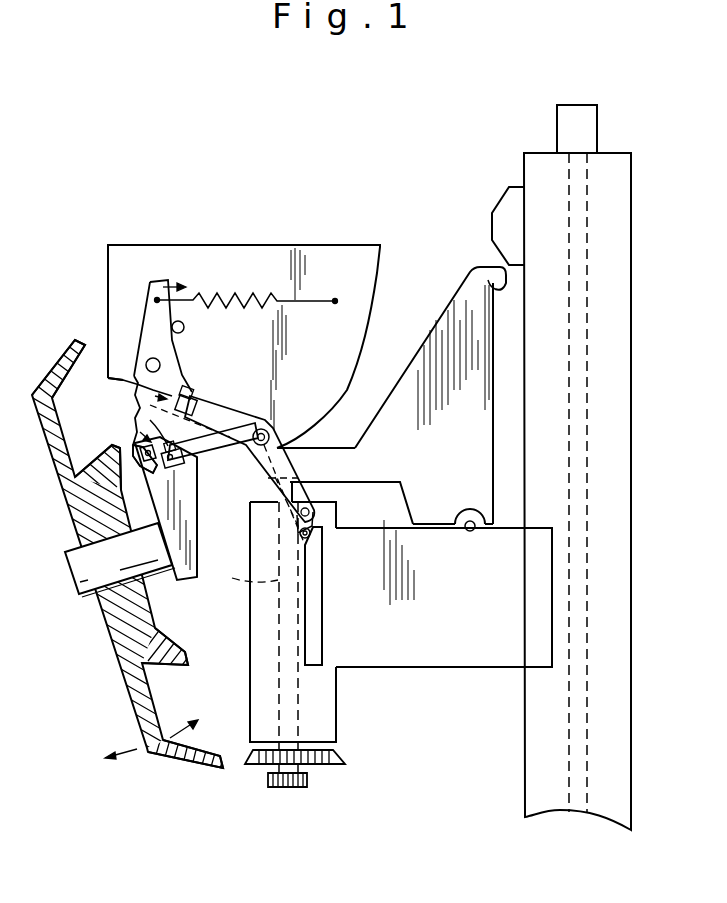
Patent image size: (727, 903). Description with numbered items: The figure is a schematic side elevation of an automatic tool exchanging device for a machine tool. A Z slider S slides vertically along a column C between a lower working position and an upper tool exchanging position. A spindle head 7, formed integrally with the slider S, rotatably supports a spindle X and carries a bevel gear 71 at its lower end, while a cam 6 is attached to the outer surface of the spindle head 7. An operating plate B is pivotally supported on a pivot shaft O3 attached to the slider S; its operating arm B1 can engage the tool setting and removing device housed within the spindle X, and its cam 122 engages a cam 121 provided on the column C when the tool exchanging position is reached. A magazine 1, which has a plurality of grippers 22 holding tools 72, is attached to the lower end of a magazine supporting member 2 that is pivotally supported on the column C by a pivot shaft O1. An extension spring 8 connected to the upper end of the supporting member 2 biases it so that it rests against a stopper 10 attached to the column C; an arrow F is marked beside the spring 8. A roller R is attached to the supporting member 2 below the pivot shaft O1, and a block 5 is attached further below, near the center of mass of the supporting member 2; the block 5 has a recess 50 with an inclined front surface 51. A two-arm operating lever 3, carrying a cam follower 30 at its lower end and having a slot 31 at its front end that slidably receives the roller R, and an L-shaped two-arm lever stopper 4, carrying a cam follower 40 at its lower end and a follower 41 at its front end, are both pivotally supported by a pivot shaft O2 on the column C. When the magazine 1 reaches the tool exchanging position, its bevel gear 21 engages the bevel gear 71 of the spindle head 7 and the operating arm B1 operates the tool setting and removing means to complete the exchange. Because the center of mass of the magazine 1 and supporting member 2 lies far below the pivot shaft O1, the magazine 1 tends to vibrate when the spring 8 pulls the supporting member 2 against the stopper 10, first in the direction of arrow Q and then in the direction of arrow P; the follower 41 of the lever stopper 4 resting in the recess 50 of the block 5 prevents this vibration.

The magazine 1 is at (110, 633).
The magazine supporting member 2 is at (137, 410).
The two-arm operating lever 3 is at (241, 413).
The L-shaped two-arm lever stopper 4 is at (213, 455).
The block 5 is at (131, 517).
The cam 6 is at (305, 632).
The spindle head 7 is at (330, 705).
The extension spring 8 is at (233, 290).
The stopper 10 is at (185, 327).
The bevel gear 21 is at (103, 470).
The grippers 22 is at (58, 365).
The cam follower 30 is at (309, 516).
The slot 31 is at (115, 381).
The cam follower 40 is at (300, 533).
The follower 41 is at (185, 467).
The recess 50 is at (138, 438).
The inclined front surface 51 is at (147, 463).
The bevel gear 71 is at (343, 760).
The tools 72 is at (287, 790).
The cam 121 is at (502, 203).
The cam 122 is at (498, 288).
The operating plate B is at (427, 340).
The operating arm B1 is at (320, 447).
The column C is at (348, 244).
The Z slider S is at (490, 668).
The force arrow F is at (171, 285).
The arrow P is at (184, 724).
The arrow Q is at (121, 744).
The roller R is at (198, 392).
The spindle X is at (247, 579).
The pivot shaft O1 is at (163, 363).
The pivot shaft O2 is at (270, 428).
The pivot shaft O3 is at (478, 523).